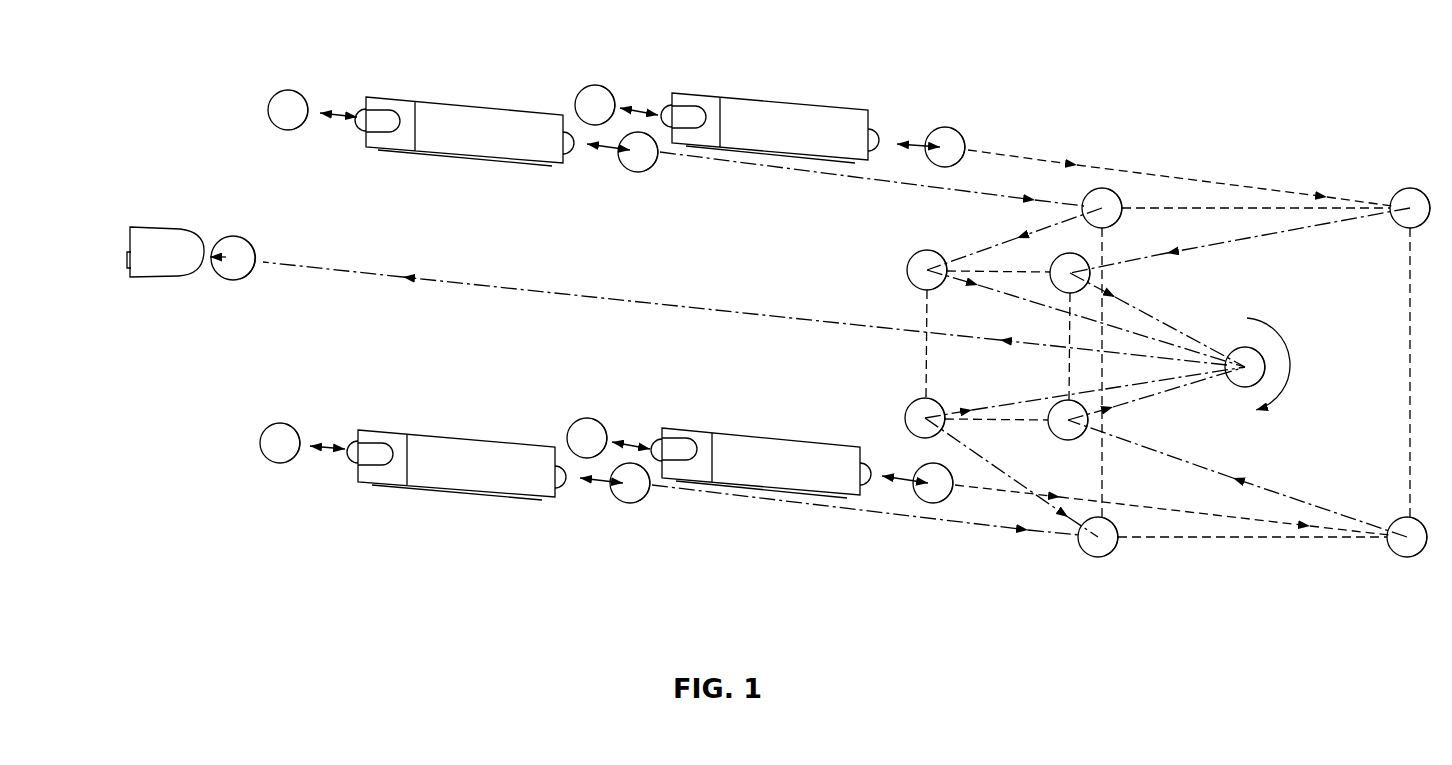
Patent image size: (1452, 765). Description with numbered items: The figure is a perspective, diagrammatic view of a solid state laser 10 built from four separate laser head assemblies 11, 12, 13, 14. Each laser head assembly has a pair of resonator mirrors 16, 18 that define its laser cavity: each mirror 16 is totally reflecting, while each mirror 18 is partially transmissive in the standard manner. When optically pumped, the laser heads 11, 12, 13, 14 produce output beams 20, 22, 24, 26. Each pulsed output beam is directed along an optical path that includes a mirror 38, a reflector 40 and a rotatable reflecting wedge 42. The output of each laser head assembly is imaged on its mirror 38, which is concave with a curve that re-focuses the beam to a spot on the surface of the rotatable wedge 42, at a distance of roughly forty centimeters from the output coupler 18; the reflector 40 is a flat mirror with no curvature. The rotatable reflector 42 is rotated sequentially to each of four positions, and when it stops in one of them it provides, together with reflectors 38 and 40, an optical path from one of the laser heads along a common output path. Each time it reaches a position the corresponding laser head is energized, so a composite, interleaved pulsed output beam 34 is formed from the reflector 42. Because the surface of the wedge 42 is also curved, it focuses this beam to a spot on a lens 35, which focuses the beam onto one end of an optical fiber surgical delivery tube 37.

The solid state laser 10 is at (740, 614).
The laser head assembly 11 is at (445, 93).
The laser head assembly 12 is at (757, 95).
The laser head assembly 13 is at (448, 428).
The laser head assembly 14 is at (770, 427).
The resonator mirror 16 is at (282, 98).
The resonator mirror 18 is at (645, 172).
The output beam 20 is at (893, 183).
The output beam 22 is at (1007, 155).
The output beam 24 is at (867, 510).
The output beam 26 is at (980, 487).
The interleaved pulsed output beam 34 is at (533, 288).
The lens 35 is at (242, 245).
The optical fiber surgical delivery tube 37 is at (158, 230).
The mirror 38 is at (1112, 190).
The reflector 40 is at (1060, 250).
The rotatable reflecting wedge 42 is at (1238, 347).